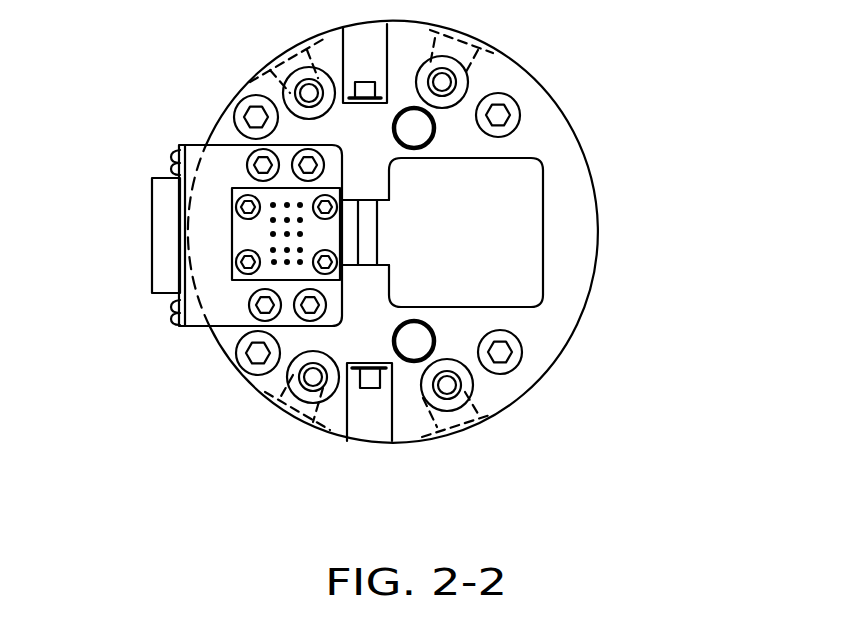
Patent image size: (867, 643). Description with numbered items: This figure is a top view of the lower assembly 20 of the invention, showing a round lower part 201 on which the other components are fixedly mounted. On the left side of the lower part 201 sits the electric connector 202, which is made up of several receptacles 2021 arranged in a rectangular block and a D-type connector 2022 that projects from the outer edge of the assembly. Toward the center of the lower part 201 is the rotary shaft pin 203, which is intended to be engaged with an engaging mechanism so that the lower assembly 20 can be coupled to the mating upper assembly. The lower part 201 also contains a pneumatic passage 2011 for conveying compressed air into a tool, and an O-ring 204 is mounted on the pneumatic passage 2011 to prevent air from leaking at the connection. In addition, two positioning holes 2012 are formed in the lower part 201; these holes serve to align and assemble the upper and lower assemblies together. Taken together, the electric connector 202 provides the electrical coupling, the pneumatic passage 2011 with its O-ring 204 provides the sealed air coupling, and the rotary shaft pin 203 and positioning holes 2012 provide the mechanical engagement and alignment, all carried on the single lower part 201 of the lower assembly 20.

The lower assembly 20 is at (598, 228).
The lower part 201 is at (548, 325).
The pneumatic passage 2011 is at (450, 388).
The positioning holes 2012 is at (415, 342).
The electric connector 202 is at (210, 303).
The receptacles 2021 is at (274, 263).
The D-type connector 2022 is at (163, 225).
The rotary shaft pin 203 is at (367, 230).
The O-ring 204 is at (423, 400).